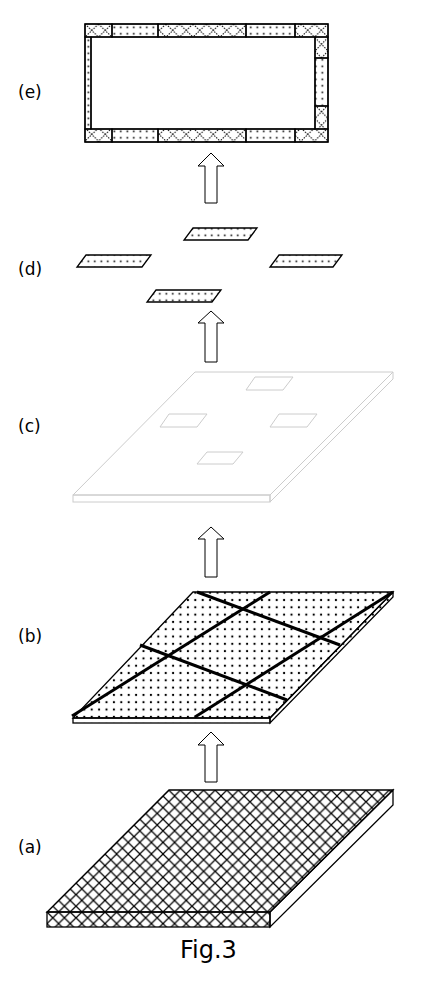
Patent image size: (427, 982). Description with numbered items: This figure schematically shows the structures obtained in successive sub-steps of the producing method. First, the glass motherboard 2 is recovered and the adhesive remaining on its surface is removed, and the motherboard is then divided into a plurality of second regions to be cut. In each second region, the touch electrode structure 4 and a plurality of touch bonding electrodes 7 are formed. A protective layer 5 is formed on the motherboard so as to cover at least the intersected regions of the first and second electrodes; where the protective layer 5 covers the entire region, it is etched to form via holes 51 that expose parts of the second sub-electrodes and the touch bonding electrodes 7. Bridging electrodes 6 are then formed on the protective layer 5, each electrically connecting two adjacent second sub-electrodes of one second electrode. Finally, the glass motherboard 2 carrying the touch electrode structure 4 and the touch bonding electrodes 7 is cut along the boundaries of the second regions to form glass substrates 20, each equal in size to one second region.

The glass motherboard 2 is at (325, 865).
The touch electrode structure 4 is at (298, 670).
The protective layer 5 is at (273, 458).
The via holes 51 is at (217, 457).
The bridging electrodes 6 is at (297, 257).
The touch bonding electrodes 7 is at (325, 84).
The glass substrates 20 is at (303, 138).